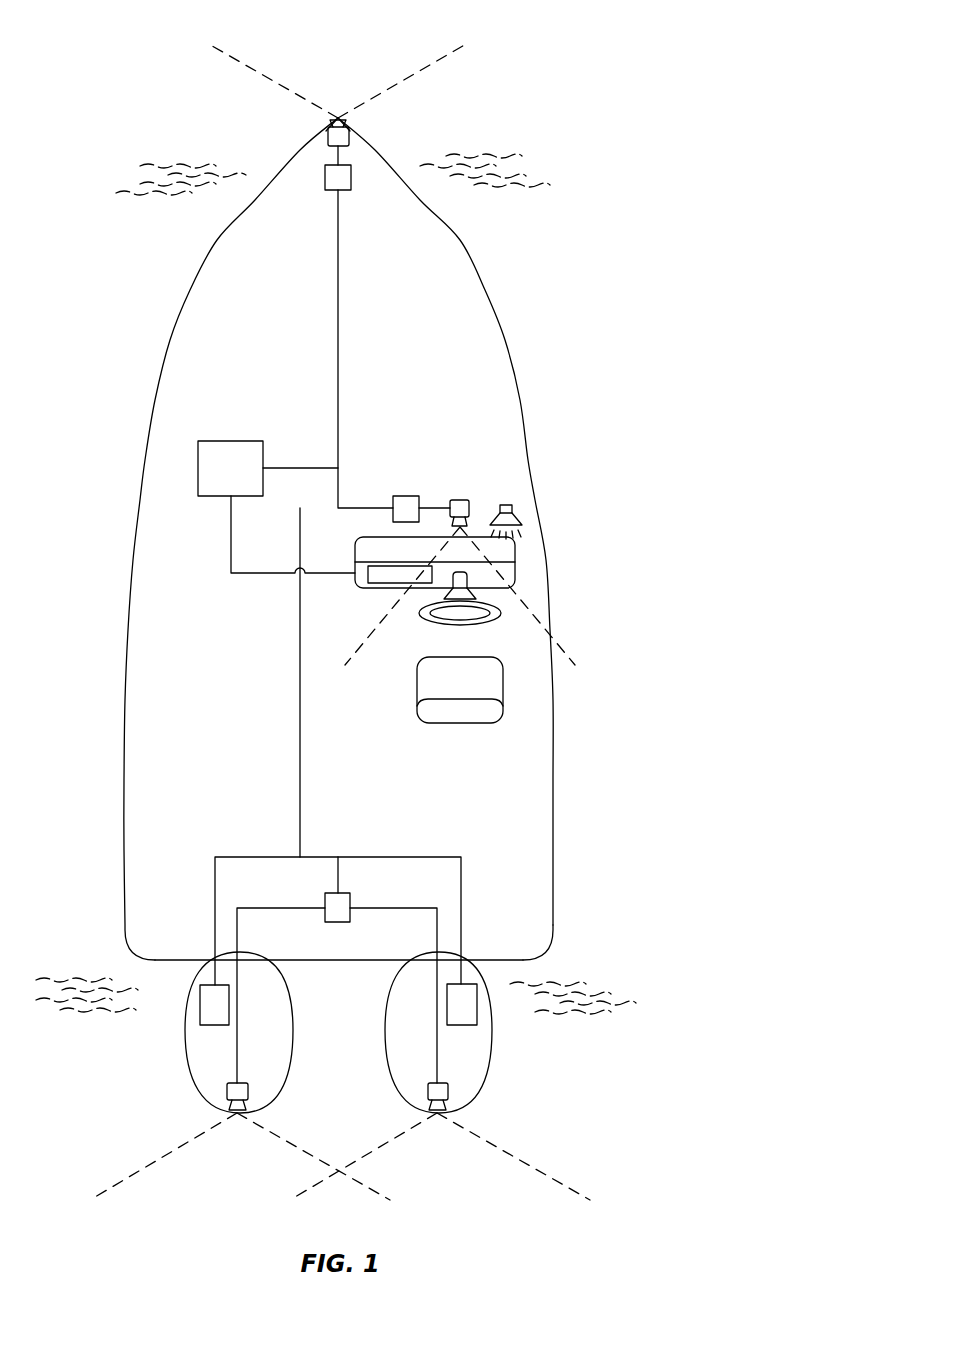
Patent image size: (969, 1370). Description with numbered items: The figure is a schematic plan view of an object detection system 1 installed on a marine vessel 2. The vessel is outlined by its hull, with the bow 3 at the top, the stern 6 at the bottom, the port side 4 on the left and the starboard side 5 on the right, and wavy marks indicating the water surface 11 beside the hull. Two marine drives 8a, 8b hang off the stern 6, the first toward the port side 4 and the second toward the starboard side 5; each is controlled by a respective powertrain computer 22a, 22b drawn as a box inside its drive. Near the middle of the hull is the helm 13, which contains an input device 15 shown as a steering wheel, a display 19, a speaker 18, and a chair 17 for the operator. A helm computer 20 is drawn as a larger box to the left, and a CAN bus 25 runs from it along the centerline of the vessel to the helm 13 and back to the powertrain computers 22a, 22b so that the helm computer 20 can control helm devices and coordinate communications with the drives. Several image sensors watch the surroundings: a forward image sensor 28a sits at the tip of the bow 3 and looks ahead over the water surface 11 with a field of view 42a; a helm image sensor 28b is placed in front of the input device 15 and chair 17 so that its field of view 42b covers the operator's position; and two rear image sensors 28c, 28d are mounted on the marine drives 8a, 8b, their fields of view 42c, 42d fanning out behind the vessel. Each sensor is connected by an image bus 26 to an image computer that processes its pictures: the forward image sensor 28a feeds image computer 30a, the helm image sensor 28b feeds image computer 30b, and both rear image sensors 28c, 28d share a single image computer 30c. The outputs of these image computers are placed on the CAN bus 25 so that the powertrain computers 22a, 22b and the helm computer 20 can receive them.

The object detection system 1 is at (606, 93).
The marine vessel 2 is at (462, 240).
The bow 3 is at (330, 134).
The port side 4 is at (170, 338).
The starboard side 5 is at (507, 342).
The stern 6 is at (318, 961).
The marine drive 8a is at (200, 1060).
The marine drive 8b is at (475, 1060).
The water surface 11 is at (101, 173).
The helm 13 is at (518, 562).
The input device 15 is at (492, 618).
The chair 17 is at (492, 693).
The speaker 18 is at (510, 505).
The display 19 is at (386, 584).
The helm computer 20 is at (232, 441).
The powertrain computer 22a is at (210, 1004).
The powertrain computer 22b is at (466, 1004).
The CAN bus 25 is at (338, 330).
The image bus 26 is at (343, 158).
The forward image sensor 28a is at (350, 130).
The helm image sensor 28b is at (462, 500).
The rear image sensor 28c is at (250, 1092).
The rear image sensor 28d is at (450, 1092).
The image computer 30a is at (340, 236).
The image computer 30b is at (407, 496).
The image computer 30c is at (352, 895).
The field of view 42a is at (430, 66).
The field of view 42b is at (566, 652).
The field of view 42c is at (132, 1175).
The field of view 42d is at (552, 1174).